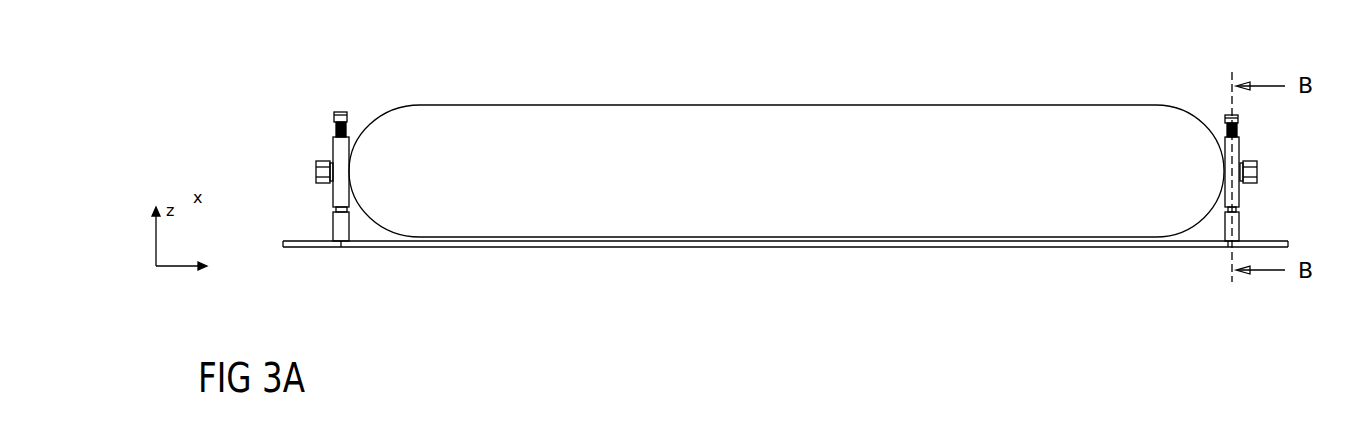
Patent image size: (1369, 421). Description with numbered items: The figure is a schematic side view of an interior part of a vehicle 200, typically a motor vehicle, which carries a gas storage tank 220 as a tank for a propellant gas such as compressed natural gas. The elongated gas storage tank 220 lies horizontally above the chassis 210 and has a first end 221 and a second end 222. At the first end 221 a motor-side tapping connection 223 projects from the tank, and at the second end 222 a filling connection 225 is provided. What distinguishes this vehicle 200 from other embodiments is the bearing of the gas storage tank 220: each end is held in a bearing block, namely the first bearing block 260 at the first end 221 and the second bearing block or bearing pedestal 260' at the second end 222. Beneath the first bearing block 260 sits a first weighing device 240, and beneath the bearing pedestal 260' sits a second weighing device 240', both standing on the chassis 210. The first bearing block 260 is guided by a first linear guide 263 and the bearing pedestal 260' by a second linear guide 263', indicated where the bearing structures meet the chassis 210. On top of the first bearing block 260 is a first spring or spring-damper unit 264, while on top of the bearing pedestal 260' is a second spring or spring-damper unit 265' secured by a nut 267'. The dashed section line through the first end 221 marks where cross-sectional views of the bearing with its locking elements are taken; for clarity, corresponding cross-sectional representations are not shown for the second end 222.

The vehicle 200 is at (775, 62).
The chassis 210 is at (860, 247).
The gas storage tank 220 is at (770, 179).
The first end of the gas storage tank 221 is at (1214, 100).
The second end of the gas storage tank 222 is at (359, 104).
The tapping connection of the gas storage tank 223 is at (1271, 172).
The filling connection of the gas storage tank 225 is at (306, 170).
The first weighing device 240 is at (1266, 222).
The second weighing device 240' is at (297, 224).
The first bearing block 260 is at (1266, 167).
The bearing pedestal 260' is at (390, 172).
The first linear guide 263 is at (1210, 275).
The second linear guide 263' is at (342, 274).
The first spring/spring-damper unit 264 is at (1250, 128).
The second spring/spring-damper unit 265' is at (293, 120).
The nut 267' is at (318, 87).